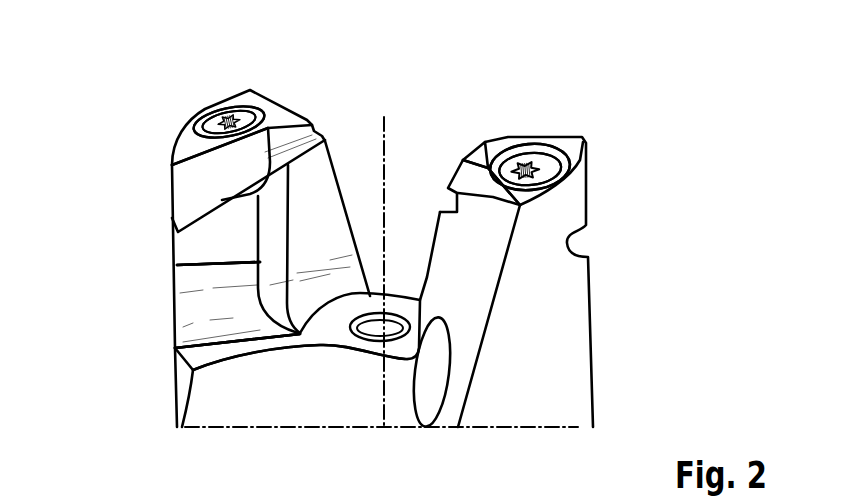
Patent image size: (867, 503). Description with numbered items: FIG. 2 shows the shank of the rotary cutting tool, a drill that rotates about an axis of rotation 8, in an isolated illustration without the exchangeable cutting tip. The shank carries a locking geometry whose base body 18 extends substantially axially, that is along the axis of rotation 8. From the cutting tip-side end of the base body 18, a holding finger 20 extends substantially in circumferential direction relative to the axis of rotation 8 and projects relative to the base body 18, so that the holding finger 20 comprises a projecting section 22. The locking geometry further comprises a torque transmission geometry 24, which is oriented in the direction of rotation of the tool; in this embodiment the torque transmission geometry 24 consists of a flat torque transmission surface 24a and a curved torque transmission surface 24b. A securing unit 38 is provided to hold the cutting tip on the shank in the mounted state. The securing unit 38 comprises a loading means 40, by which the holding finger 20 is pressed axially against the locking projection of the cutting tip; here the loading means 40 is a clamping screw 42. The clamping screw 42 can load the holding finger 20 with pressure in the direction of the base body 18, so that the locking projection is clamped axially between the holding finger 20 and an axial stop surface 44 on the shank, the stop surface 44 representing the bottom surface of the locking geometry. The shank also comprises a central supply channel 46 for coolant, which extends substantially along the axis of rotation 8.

The axis of rotation 8 is at (384, 156).
The base body 18 is at (168, 210).
The holding finger 20 is at (177, 145).
The projecting section 22 is at (177, 145).
The torque transmission geometry 24 is at (187, 255).
The flat torque transmission surface 24a is at (187, 255).
The curved torque transmission surface 24b is at (187, 303).
The securing unit 38 is at (218, 121).
The loading means 40 is at (216, 117).
The clamping screw 42 is at (216, 117).
The axial stop surface 44 is at (317, 332).
The central supply channel 46 is at (393, 325).